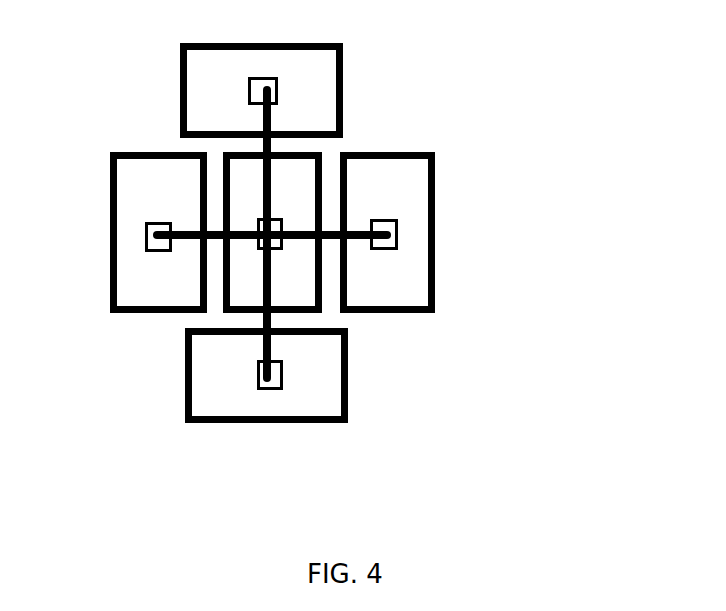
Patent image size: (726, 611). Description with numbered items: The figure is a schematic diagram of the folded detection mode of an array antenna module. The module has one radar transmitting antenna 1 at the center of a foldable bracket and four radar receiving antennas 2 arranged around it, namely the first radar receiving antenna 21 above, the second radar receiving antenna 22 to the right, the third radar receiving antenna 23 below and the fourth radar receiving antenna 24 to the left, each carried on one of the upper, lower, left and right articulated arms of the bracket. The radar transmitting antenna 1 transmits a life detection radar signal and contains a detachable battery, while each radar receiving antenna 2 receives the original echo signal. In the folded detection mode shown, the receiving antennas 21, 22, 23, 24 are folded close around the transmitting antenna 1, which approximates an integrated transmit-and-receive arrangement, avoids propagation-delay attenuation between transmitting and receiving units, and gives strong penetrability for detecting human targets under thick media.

The radar transmitting antenna 1 is at (312, 212).
The radar receiving antenna 2 is at (352, 249).
The first radar receiving antenna 21 is at (326, 76).
The second radar receiving antenna 22 is at (429, 212).
The third radar receiving antenna 23 is at (313, 377).
The fourth radar receiving antenna 24 is at (118, 233).